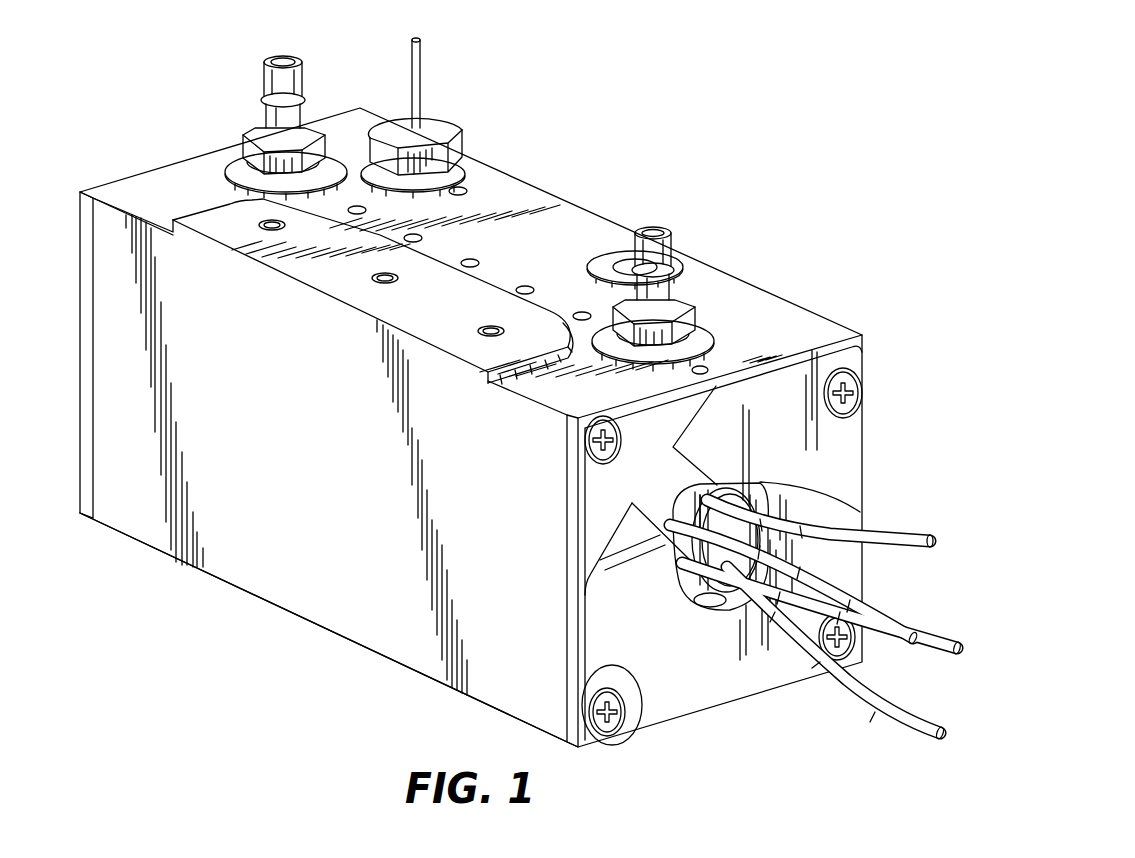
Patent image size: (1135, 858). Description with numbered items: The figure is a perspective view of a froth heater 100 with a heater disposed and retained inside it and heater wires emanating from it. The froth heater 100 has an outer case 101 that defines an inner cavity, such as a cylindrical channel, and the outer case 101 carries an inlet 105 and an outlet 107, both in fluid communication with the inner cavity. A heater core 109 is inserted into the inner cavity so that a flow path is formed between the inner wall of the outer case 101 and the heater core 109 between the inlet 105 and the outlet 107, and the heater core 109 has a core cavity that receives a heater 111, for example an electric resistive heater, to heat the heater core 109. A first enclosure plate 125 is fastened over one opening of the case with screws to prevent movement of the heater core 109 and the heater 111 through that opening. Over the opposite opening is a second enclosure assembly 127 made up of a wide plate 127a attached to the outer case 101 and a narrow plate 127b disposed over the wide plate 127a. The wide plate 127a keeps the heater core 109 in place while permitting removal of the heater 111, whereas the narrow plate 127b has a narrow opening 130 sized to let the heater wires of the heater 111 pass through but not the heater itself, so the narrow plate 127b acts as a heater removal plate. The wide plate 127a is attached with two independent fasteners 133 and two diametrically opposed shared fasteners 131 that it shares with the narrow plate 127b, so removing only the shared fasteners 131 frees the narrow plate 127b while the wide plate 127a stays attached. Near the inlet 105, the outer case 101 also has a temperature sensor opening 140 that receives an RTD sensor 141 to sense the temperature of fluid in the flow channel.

The froth heater 100 is at (499, 408).
The outer case 101 is at (308, 461).
The inlet 105 is at (247, 170).
The outlet 107 is at (697, 333).
The heater core 109 is at (723, 603).
The heater 111 is at (735, 522).
The first enclosure plate 125 is at (158, 160).
The second enclosure assembly 127 is at (766, 487).
The wide plate 127a is at (677, 489).
The narrow plate 127b is at (775, 398).
The narrow opening 130 is at (745, 548).
The shared fasteners 131 is at (617, 720).
The independent fasteners 133 is at (590, 440).
The temperature sensor opening 140 is at (460, 170).
The resistance temperature detector (RTD) sensor 141 is at (460, 118).